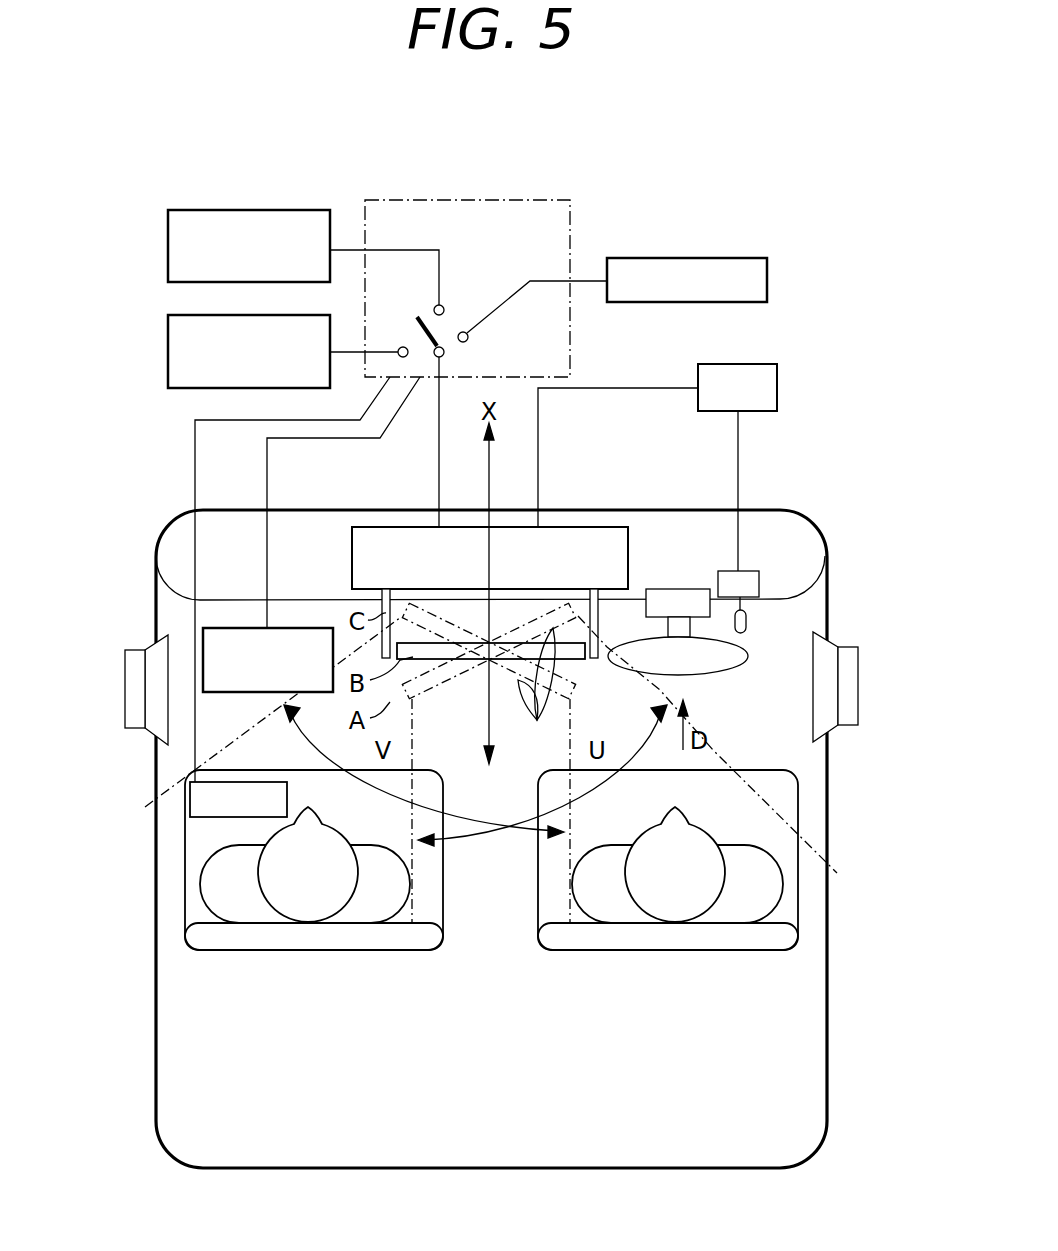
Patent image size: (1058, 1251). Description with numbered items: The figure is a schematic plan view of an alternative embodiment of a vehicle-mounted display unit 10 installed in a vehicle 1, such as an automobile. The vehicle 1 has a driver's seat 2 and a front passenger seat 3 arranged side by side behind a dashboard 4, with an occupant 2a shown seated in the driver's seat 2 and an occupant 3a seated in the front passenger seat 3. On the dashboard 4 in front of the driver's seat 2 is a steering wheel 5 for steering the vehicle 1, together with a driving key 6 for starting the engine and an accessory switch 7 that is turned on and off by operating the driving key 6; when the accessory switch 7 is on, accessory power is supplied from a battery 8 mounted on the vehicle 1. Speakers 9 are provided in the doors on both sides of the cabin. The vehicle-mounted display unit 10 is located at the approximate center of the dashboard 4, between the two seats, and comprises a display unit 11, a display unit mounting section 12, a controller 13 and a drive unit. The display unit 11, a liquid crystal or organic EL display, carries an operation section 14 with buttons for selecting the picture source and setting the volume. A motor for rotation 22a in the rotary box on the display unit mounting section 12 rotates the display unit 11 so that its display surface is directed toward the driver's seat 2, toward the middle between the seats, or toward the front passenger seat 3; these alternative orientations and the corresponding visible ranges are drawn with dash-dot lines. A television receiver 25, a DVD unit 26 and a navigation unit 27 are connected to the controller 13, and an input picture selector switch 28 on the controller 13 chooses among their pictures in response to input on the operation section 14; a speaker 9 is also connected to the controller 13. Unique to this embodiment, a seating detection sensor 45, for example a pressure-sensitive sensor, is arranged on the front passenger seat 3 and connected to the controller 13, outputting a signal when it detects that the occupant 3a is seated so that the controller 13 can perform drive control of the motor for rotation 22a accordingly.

The vehicle 1 is at (829, 603).
The driver's seat 2 is at (800, 818).
The occupant 2a is at (760, 890).
The front passenger seat 3 is at (183, 823).
The occupant 3a is at (225, 880).
The dashboard 4 is at (806, 547).
The steering wheel 5 is at (735, 675).
The driving key 6 is at (748, 622).
The accessory switch 7 is at (757, 571).
The battery 8 is at (777, 378).
The speaker 9 is at (125, 677).
The vehicle-mounted display unit 10 is at (482, 160).
The display unit 11 is at (537, 721).
The display unit mounting section 12 is at (598, 356).
The controller 13 is at (570, 200).
The operation section 14 is at (253, 692).
The motor for rotation 22a is at (588, 527).
The television receiver 25 is at (168, 233).
The DVD unit 26 is at (722, 258).
The navigation unit 27 is at (168, 342).
The input picture selector switch 28 is at (420, 306).
The seating detection sensor 45 is at (287, 797).